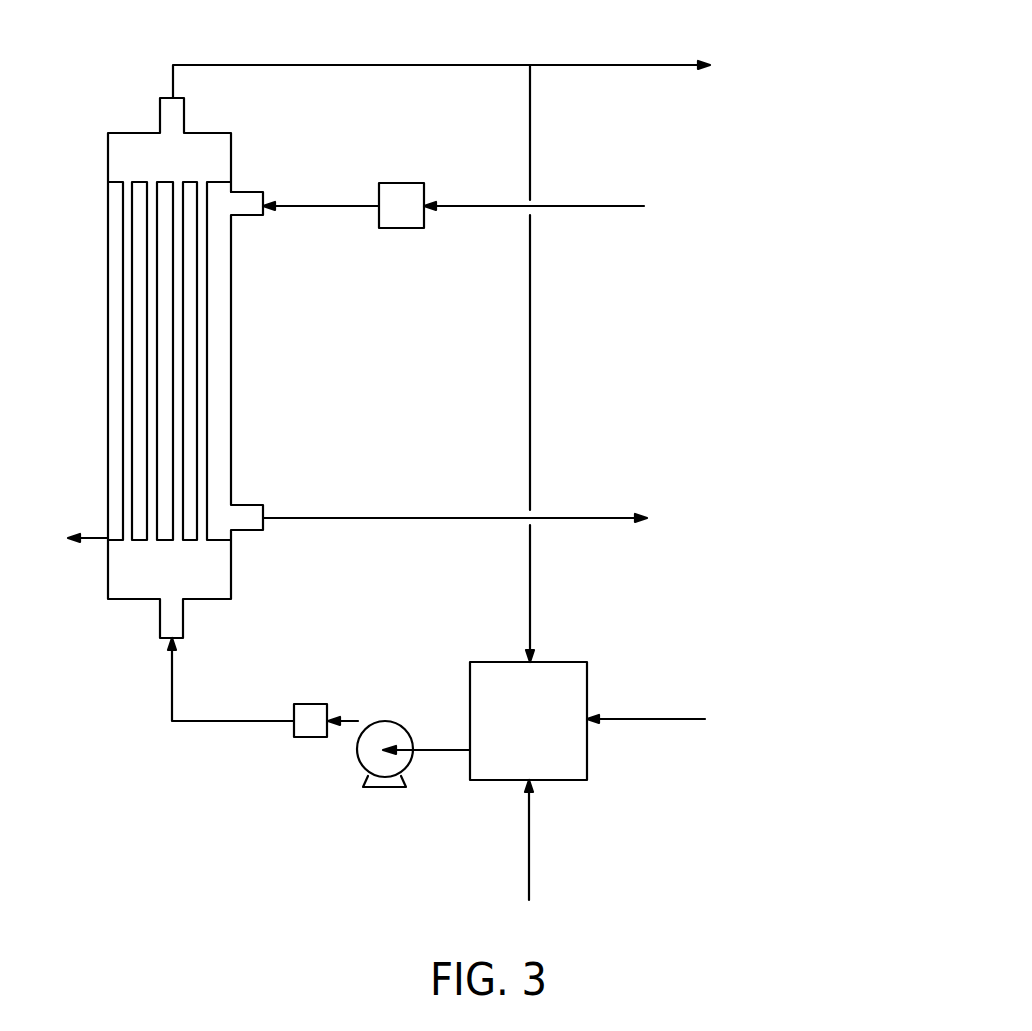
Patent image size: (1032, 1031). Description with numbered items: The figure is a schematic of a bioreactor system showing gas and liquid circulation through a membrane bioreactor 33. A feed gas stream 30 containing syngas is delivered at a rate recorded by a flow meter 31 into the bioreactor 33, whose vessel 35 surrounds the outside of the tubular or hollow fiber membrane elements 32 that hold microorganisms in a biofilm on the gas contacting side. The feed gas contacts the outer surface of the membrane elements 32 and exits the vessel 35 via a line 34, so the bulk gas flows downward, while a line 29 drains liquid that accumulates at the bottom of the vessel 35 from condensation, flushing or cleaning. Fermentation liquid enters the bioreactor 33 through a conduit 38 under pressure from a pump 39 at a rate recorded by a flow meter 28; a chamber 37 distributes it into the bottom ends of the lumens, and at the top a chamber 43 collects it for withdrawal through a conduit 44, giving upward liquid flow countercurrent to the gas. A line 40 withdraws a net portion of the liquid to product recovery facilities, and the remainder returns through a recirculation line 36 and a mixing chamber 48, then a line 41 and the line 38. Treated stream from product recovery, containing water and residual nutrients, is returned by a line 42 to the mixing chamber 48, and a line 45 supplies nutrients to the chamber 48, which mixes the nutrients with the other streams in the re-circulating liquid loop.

The flow meter 28 is at (305, 704).
The line for draining liquid 29 is at (95, 541).
The feed gas stream 30 is at (600, 206).
The flow meter 31 is at (400, 183).
The membrane elements 32 is at (147, 352).
The bioreactor 33 is at (169, 367).
The line 34 is at (430, 518).
The vessel 35 is at (233, 325).
The recirculation line 36 is at (532, 326).
The chamber 37 is at (212, 585).
The conduit 38 is at (200, 723).
The pump 39 is at (405, 727).
The line 40 is at (635, 65).
The line 41 is at (452, 752).
The line 42 is at (652, 719).
The chamber 43 is at (130, 155).
The conduit 44 is at (358, 65).
The line 45 is at (531, 840).
The mixing chamber 48 is at (568, 662).